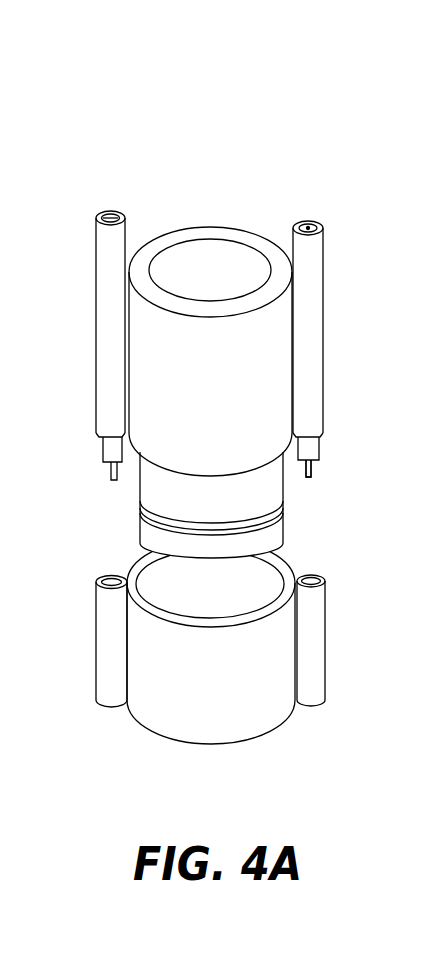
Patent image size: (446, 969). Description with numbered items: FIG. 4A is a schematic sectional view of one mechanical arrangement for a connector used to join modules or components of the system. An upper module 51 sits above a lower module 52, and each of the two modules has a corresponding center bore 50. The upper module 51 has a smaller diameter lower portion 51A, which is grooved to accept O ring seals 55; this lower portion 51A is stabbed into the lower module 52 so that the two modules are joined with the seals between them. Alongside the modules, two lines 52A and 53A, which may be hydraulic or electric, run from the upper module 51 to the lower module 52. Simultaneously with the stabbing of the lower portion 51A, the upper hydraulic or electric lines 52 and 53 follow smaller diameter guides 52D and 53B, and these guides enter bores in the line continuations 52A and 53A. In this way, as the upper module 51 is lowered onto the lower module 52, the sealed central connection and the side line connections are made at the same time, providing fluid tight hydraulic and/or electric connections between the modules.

The center bore 50 is at (232, 262).
The upper module 51 is at (248, 375).
The smaller diameter lower portion 51A is at (270, 483).
The lower module 52 is at (308, 305).
The line 52A is at (315, 590).
The smaller diameter guide 52D is at (313, 472).
The upper hydraulic or electric line 53 is at (105, 283).
The line 53A is at (105, 645).
The smaller diameter guide 53B is at (108, 473).
The O ring seal 55 is at (257, 525).